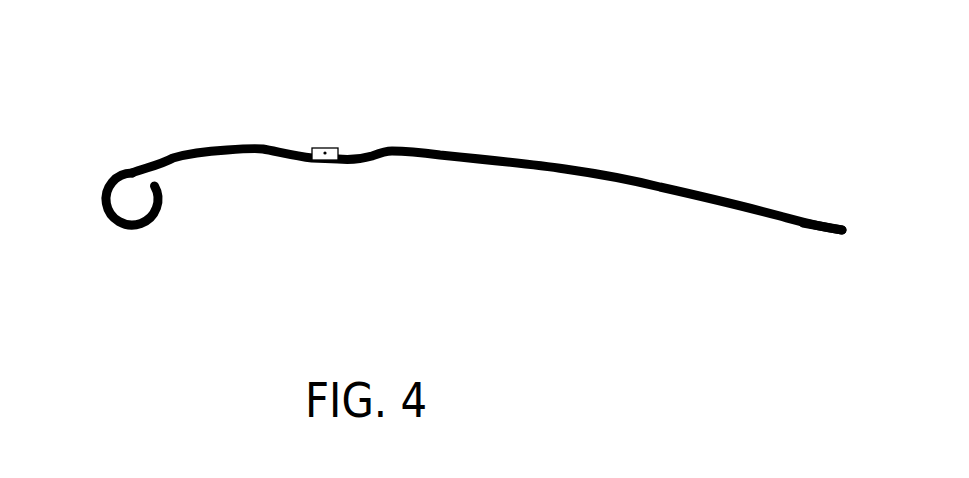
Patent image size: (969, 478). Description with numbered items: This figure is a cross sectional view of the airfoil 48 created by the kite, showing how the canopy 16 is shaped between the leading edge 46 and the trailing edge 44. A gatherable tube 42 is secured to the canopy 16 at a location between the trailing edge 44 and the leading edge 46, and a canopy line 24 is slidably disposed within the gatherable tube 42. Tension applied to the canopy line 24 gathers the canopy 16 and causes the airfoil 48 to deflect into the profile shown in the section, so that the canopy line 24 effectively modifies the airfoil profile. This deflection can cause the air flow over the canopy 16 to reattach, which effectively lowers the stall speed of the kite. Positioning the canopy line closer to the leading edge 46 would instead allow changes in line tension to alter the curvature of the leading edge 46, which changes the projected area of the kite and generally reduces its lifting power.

The canopy 16 is at (563, 166).
The canopy line 24 is at (335, 160).
The gatherable tube 42 is at (320, 148).
The trailing edge 44 is at (106, 212).
The leading edge 46 is at (842, 230).
The airfoil 48 is at (483, 88).